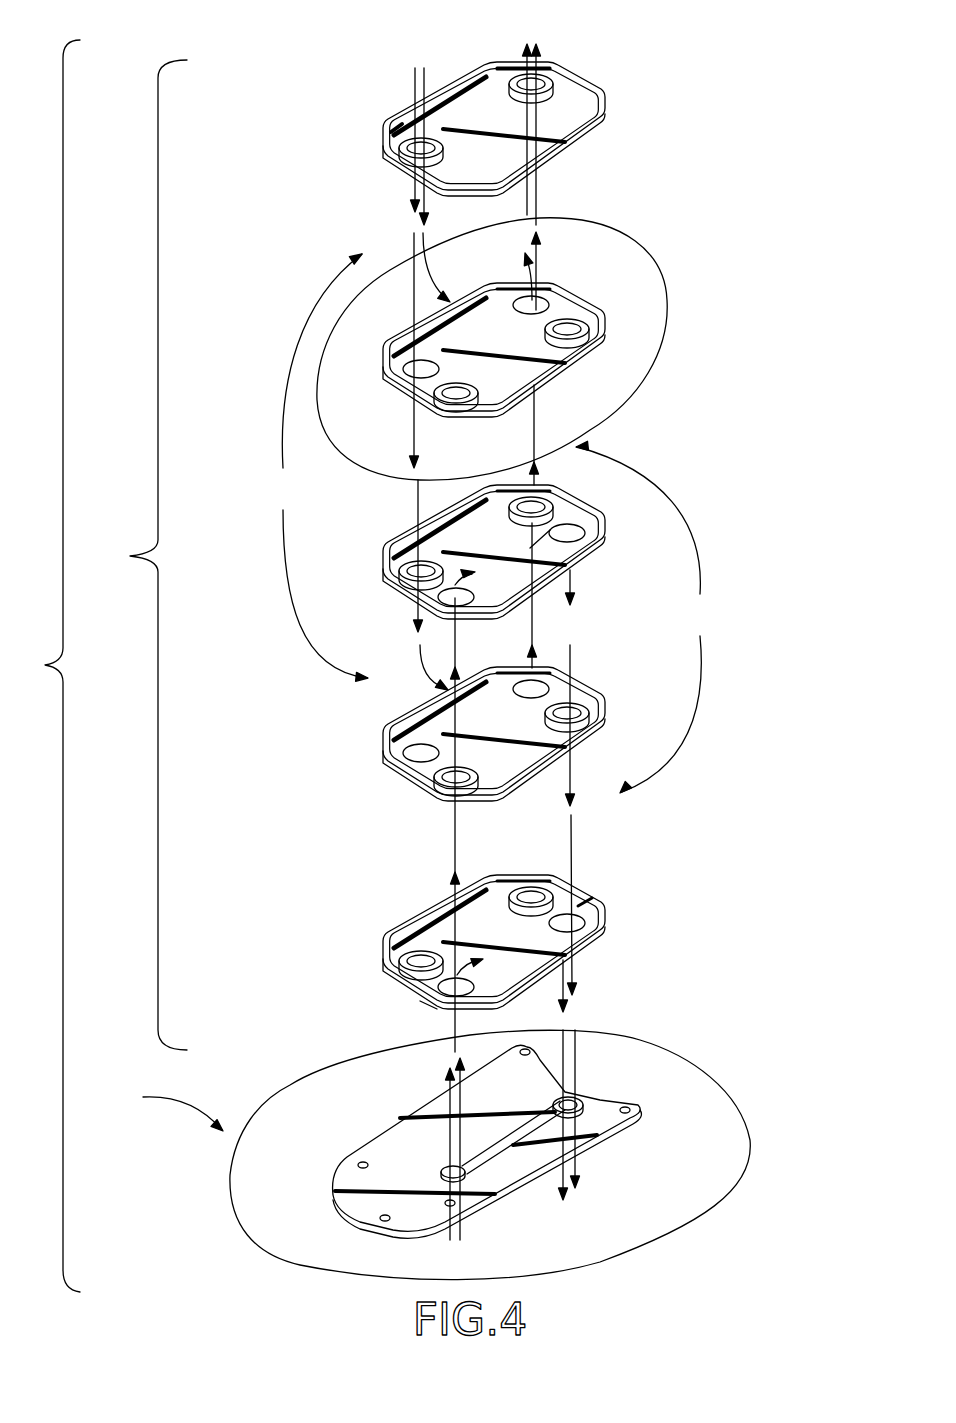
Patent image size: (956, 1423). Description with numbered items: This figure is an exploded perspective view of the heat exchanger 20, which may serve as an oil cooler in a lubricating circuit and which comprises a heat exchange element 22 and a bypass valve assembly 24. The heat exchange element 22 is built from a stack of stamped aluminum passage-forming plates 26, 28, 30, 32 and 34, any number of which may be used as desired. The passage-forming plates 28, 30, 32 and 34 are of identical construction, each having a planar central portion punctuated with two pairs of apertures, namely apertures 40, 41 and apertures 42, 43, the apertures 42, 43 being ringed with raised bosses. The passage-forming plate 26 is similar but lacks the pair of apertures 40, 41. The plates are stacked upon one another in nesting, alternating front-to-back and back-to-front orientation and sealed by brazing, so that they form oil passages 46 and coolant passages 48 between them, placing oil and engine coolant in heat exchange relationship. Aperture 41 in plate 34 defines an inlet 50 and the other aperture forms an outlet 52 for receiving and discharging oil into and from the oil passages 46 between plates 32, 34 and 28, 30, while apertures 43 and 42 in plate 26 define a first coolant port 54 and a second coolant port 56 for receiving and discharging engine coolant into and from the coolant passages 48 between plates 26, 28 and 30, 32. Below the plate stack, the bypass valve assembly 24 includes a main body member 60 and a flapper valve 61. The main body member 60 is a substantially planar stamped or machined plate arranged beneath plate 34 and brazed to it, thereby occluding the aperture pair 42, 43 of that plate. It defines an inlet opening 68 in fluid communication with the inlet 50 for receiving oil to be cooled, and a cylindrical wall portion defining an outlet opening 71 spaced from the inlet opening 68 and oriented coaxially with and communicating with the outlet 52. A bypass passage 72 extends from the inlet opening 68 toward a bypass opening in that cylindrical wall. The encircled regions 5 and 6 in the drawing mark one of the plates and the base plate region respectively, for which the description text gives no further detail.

The enlarged fluid plate region 5 is at (650, 263).
The base plate region 6 is at (713, 1084).
The heat exchanger 20 is at (43, 666).
The heat exchange element 22 is at (133, 555).
The bypass valve assembly 24 is at (161, 1107).
The passage-forming plate 26 is at (384, 180).
The passage-forming plate 28 is at (384, 372).
The passage-forming plate 30 is at (384, 572).
The passage-forming plate 32 is at (376, 752).
The passage-forming plate 34 is at (378, 958).
The aperture 40 is at (600, 925).
The aperture 41 is at (460, 988).
The aperture 42 is at (553, 66).
The aperture 43 is at (392, 143).
The oil passage 46 is at (645, 617).
The coolant passage 48 is at (317, 467).
The inlet 50 is at (432, 996).
The outlet 52 is at (585, 907).
The first coolant port 54 is at (397, 124).
The second coolant port 56 is at (510, 62).
The main body member 60 is at (350, 1184).
The flapper valve 61 is at (578, 1102).
The inlet opening 68 is at (425, 1150).
The outlet opening 71 is at (572, 1097).
The bypass passage 72 is at (502, 1124).